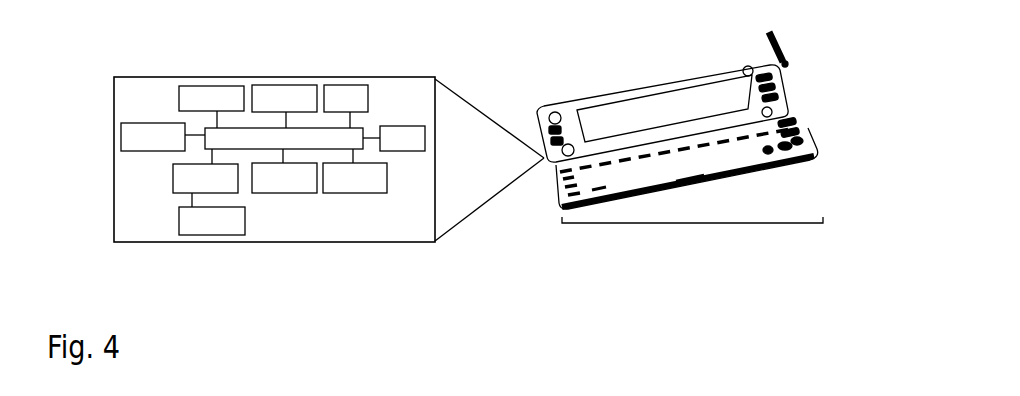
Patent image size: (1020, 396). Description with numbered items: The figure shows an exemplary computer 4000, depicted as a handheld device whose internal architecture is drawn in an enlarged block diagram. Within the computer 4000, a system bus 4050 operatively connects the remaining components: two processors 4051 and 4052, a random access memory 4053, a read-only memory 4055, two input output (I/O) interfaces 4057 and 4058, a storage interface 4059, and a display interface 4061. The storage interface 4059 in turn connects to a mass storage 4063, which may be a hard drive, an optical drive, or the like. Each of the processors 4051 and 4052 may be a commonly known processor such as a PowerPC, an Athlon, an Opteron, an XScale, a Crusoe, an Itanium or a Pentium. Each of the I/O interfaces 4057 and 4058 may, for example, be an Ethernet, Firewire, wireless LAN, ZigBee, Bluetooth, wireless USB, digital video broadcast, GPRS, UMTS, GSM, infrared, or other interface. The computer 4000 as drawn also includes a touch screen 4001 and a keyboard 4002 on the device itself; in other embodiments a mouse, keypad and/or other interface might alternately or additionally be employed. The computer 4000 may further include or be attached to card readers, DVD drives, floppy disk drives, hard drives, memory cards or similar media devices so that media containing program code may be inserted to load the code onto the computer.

The computer 4000 is at (680, 146).
The touch screen 4001 is at (630, 108).
The keyboard 4002 is at (757, 142).
The system bus 4050 is at (284, 138).
The processor 4051 is at (211, 107).
The processor 4052 is at (284, 106).
The random access memory 4053 is at (346, 106).
The read-only memory 4055 is at (394, 138).
The input output (I/O) interface 4057 is at (355, 171).
The input output (I/O) interface 4058 is at (284, 171).
The storage interface 4059 is at (205, 171).
The display interface 4061 is at (163, 137).
The mass storage 4063 is at (212, 214).